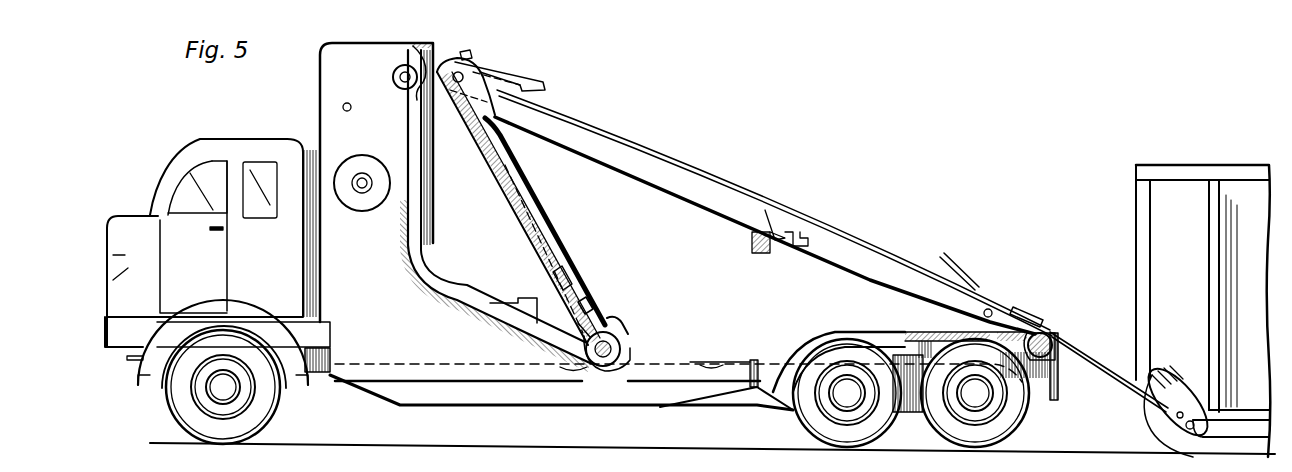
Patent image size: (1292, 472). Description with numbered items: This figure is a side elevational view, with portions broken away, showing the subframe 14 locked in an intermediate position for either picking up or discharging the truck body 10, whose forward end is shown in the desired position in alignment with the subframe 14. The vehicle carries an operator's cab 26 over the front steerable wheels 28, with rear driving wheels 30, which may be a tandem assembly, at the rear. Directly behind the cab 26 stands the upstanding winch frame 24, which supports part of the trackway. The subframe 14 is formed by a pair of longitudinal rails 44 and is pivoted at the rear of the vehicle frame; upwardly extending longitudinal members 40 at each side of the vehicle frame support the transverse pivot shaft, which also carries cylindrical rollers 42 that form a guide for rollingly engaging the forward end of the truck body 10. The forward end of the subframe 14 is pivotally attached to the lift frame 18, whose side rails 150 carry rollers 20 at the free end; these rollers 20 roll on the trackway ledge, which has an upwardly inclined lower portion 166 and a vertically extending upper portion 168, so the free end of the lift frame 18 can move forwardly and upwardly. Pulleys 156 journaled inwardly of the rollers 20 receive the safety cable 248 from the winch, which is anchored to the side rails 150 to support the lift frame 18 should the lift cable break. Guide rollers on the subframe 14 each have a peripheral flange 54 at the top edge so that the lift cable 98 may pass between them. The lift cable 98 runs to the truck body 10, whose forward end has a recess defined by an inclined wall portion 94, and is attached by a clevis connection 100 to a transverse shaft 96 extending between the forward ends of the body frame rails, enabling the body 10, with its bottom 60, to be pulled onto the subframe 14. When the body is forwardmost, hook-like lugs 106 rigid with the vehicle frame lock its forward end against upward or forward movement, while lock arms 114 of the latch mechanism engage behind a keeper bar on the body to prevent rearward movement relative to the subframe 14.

The truck body 10 is at (1176, 151).
The subframe 14 is at (668, 192).
The lift frame 18 is at (553, 216).
The rollers 20 is at (628, 354).
The winch frame 24 is at (375, 51).
The cab 26 is at (288, 157).
The front steerable wheels 28 is at (258, 395).
The rear driving wheels 30 is at (990, 433).
The upwardly extending longitudinal members 40 is at (933, 338).
The cylindrical rollers 42 is at (1047, 333).
The longitudinal rails 44 is at (713, 192).
The peripheral flange 54 is at (1018, 301).
The bottom 60 is at (712, 457).
The inclined wall portion 94 is at (1168, 388).
The transverse shaft 96 is at (1193, 433).
The lift cable 98 is at (1088, 353).
The clevis connection 100 is at (1180, 422).
The hook-like lugs 106 is at (515, 80).
The lock arms 114 is at (940, 257).
The side rails 150 is at (567, 253).
The pulleys 156 is at (622, 334).
The upwardly inclined lower portion 166 is at (493, 303).
The vertically extending upper portion 168 is at (431, 178).
The safety cable 248 is at (594, 311).